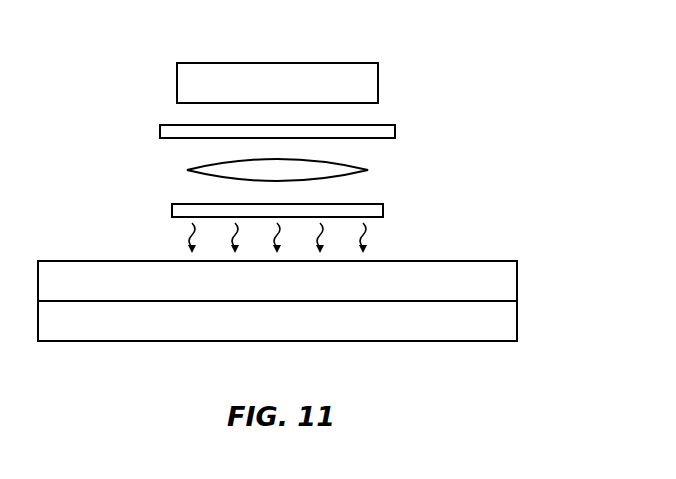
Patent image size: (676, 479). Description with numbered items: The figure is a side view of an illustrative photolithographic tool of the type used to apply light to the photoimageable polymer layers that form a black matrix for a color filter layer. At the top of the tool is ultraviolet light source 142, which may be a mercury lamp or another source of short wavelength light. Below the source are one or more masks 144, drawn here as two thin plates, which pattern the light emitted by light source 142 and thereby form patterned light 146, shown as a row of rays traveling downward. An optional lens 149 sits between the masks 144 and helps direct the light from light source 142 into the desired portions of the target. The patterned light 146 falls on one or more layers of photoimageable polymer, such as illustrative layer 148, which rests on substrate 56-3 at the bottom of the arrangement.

The ultraviolet light source 142 is at (378, 75).
The masks 144 is at (395, 128).
The lens 149 is at (368, 170).
The patterned light 146 is at (366, 234).
The layer 148 is at (517, 277).
The substrate 56-3 is at (517, 317).